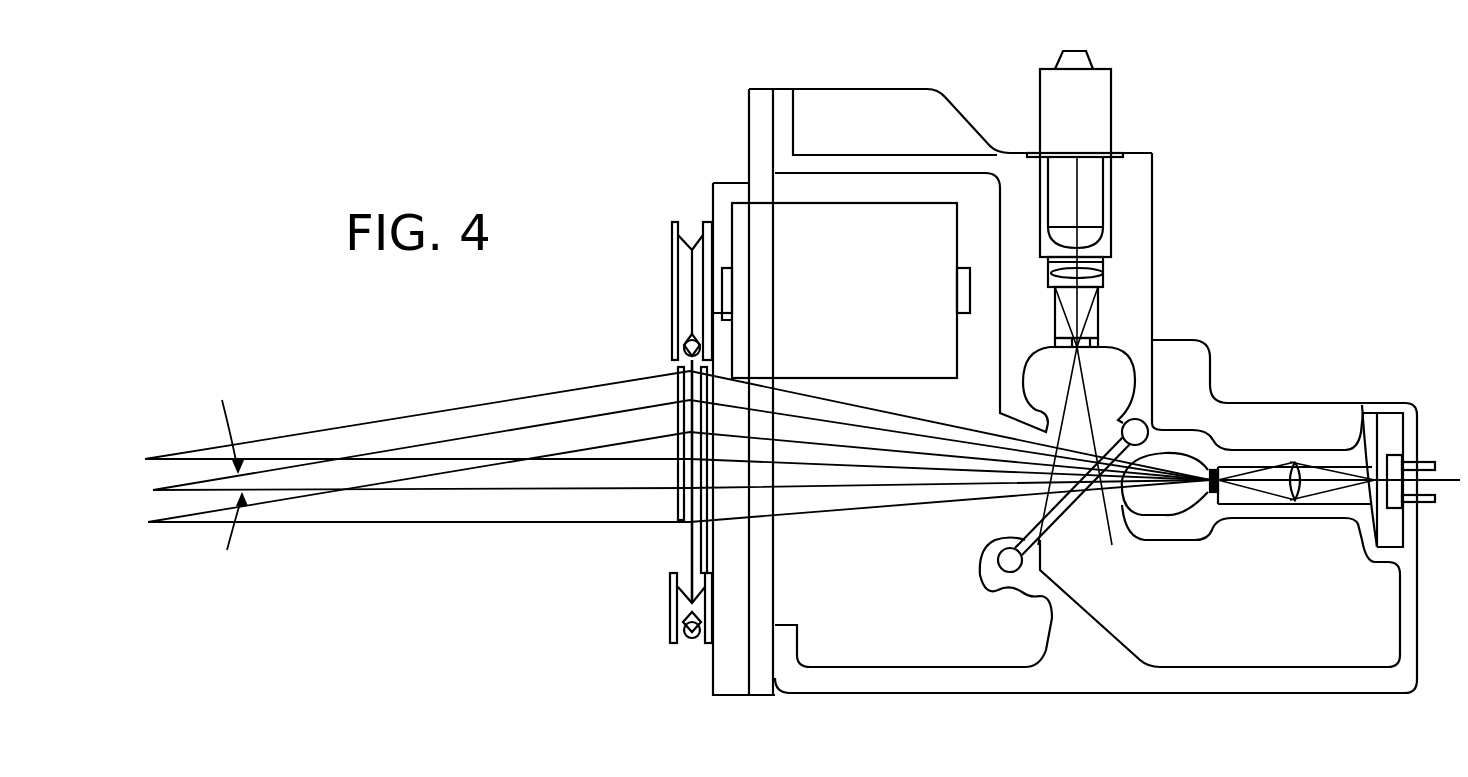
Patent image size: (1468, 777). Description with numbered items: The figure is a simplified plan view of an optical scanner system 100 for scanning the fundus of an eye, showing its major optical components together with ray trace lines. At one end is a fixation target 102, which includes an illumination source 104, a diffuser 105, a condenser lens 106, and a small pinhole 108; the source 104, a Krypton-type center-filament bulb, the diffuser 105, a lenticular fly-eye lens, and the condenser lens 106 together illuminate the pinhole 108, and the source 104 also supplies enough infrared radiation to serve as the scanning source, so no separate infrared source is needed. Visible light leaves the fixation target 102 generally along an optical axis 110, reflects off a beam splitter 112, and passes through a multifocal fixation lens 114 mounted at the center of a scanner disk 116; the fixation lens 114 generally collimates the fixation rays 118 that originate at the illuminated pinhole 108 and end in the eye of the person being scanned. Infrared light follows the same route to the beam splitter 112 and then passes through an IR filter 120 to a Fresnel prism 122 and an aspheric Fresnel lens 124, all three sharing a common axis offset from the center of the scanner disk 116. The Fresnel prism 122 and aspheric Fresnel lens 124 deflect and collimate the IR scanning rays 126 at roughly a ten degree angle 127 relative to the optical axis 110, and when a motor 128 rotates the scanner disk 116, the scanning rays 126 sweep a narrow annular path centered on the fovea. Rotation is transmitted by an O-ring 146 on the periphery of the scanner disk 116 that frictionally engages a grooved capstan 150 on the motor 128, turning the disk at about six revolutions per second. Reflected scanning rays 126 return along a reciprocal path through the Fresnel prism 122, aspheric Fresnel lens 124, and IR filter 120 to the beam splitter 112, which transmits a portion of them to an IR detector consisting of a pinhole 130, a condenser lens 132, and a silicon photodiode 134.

The optical scanner system 100 is at (536, 120).
The fixation target 102 is at (1198, 291).
The illumination source 104 is at (1090, 203).
The diffuser 105 is at (1095, 255).
The condenser lens 106 is at (1107, 285).
The pinhole 108 is at (1100, 333).
The optical axis 110 is at (532, 491).
The beam splitter 112 is at (1055, 533).
The multifocal fixation lens 114 is at (677, 497).
The scanner disk 116 is at (685, 557).
The fixation rays 118 is at (455, 523).
The IR filter 120 is at (763, 417).
The Fresnel prism 122 is at (688, 371).
The aspheric Fresnel lens 124 is at (688, 405).
The IR scanning rays 126 is at (602, 447).
The angle 127 is at (233, 537).
The motor 128 is at (872, 285).
The pinhole 130 is at (1193, 490).
The condenser lens 132 is at (1295, 497).
The silicon photodiode 134 is at (1395, 503).
The O-ring 146 is at (685, 340).
The grooved capstan 150 is at (685, 273).